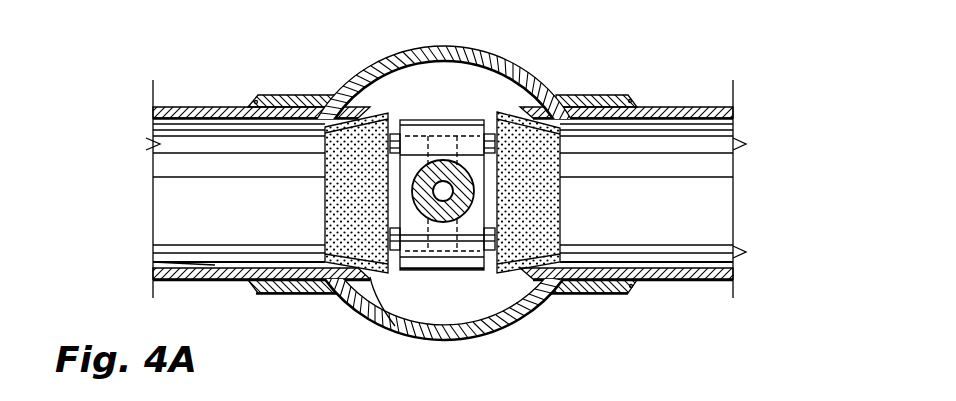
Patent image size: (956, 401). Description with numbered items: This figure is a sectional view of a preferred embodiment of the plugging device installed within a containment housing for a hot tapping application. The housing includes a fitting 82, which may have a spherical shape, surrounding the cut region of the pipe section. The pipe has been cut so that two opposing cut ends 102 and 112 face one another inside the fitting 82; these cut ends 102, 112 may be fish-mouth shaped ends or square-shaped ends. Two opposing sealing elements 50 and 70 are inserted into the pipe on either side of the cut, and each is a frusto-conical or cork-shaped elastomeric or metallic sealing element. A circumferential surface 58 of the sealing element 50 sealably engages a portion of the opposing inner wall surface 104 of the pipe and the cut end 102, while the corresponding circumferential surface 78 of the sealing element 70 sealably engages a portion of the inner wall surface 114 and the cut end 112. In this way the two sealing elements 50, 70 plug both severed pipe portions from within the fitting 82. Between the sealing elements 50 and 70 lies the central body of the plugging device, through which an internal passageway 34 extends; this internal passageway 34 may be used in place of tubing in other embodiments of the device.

The fitting 82 is at (430, 55).
The circumferential surface 58 is at (407, 335).
The internal passageway 34 is at (447, 186).
The inner wall surface 114 is at (647, 123).
The inner wall surface 104 is at (212, 263).
The sealing element 50 is at (327, 289).
The sealing element 70 is at (553, 292).
The cut end 102 is at (353, 254).
The cut end 112 is at (508, 278).
The circumferential surface 78 is at (503, 276).